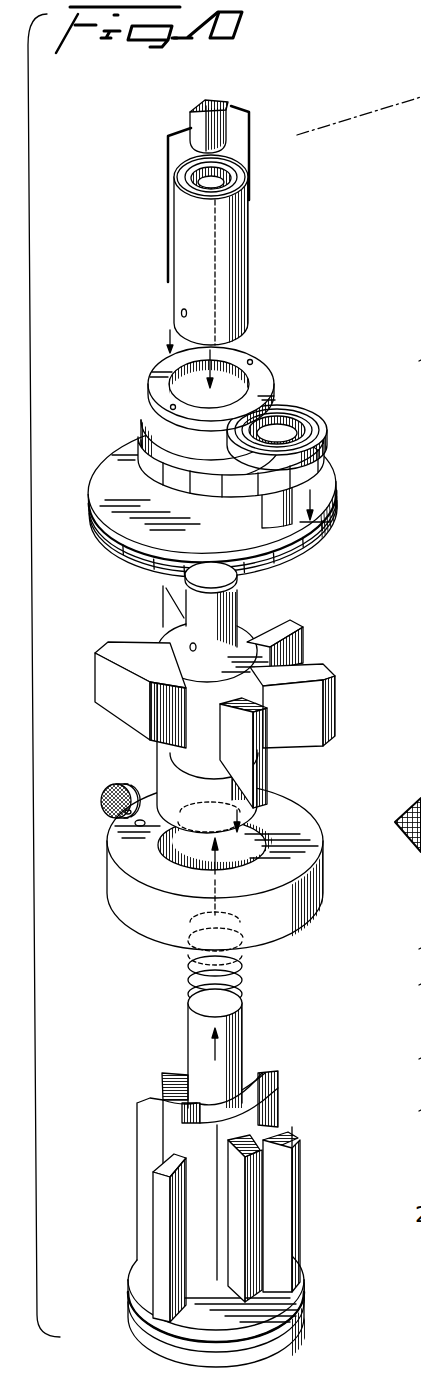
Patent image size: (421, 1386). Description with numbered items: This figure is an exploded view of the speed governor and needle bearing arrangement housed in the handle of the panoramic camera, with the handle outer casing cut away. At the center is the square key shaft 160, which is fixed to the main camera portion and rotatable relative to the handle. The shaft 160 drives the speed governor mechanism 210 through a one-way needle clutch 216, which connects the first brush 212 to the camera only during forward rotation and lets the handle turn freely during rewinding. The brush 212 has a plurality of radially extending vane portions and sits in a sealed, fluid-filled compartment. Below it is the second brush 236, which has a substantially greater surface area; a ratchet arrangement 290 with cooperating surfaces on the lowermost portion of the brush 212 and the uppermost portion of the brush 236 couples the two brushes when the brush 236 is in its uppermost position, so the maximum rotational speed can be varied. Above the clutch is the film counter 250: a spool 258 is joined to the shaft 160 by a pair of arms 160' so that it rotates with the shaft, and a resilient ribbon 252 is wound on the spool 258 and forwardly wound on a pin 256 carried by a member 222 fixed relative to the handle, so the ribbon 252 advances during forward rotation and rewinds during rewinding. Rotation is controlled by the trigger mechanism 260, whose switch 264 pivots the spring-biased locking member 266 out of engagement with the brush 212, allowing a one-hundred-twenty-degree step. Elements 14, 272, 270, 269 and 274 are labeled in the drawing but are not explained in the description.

The housing 14 is at (416, 364).
The square key shaft 160 is at (219, 109).
The arms 160' is at (203, 186).
The one-way needle clutch 216 is at (232, 250).
The spool 258 is at (262, 372).
The film counter 250 is at (330, 420).
The resilient ribbon 252 is at (140, 458).
The member 222 is at (330, 490).
The pin 256 is at (325, 538).
The first brush 212 is at (298, 640).
The speed governor mechanism 210 is at (356, 696).
The switch or trigger 264 is at (104, 790).
The trigger mechanism 260 is at (112, 812).
The ratchet arrangement 290 is at (270, 1058).
The second brush 236 is at (277, 1196).
The knob 272 is at (420, 906).
The shaft 270 is at (420, 950).
The bushing 269 is at (420, 985).
The locking member 266 is at (420, 1060).
The pin 274 is at (420, 1110).